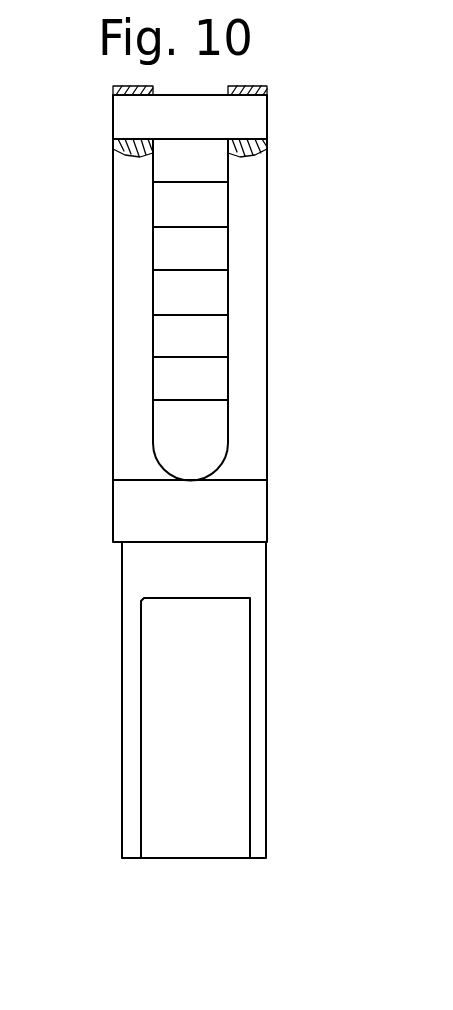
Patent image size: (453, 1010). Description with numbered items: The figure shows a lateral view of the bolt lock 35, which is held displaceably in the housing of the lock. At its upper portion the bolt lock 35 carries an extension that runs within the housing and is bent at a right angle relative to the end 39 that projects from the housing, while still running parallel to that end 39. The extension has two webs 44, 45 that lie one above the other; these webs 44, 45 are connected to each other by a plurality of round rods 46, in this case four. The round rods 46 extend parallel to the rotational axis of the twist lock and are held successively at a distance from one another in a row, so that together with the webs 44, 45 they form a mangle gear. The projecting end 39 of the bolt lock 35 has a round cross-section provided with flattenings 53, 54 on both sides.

The bolt lock 35 is at (90, 563).
The end of the bolt lock 39 is at (122, 798).
The web 44 is at (132, 257).
The web 45 is at (253, 433).
The round rods 46 is at (255, 113).
The flattening 53 is at (186, 815).
The flattening 54 is at (209, 763).